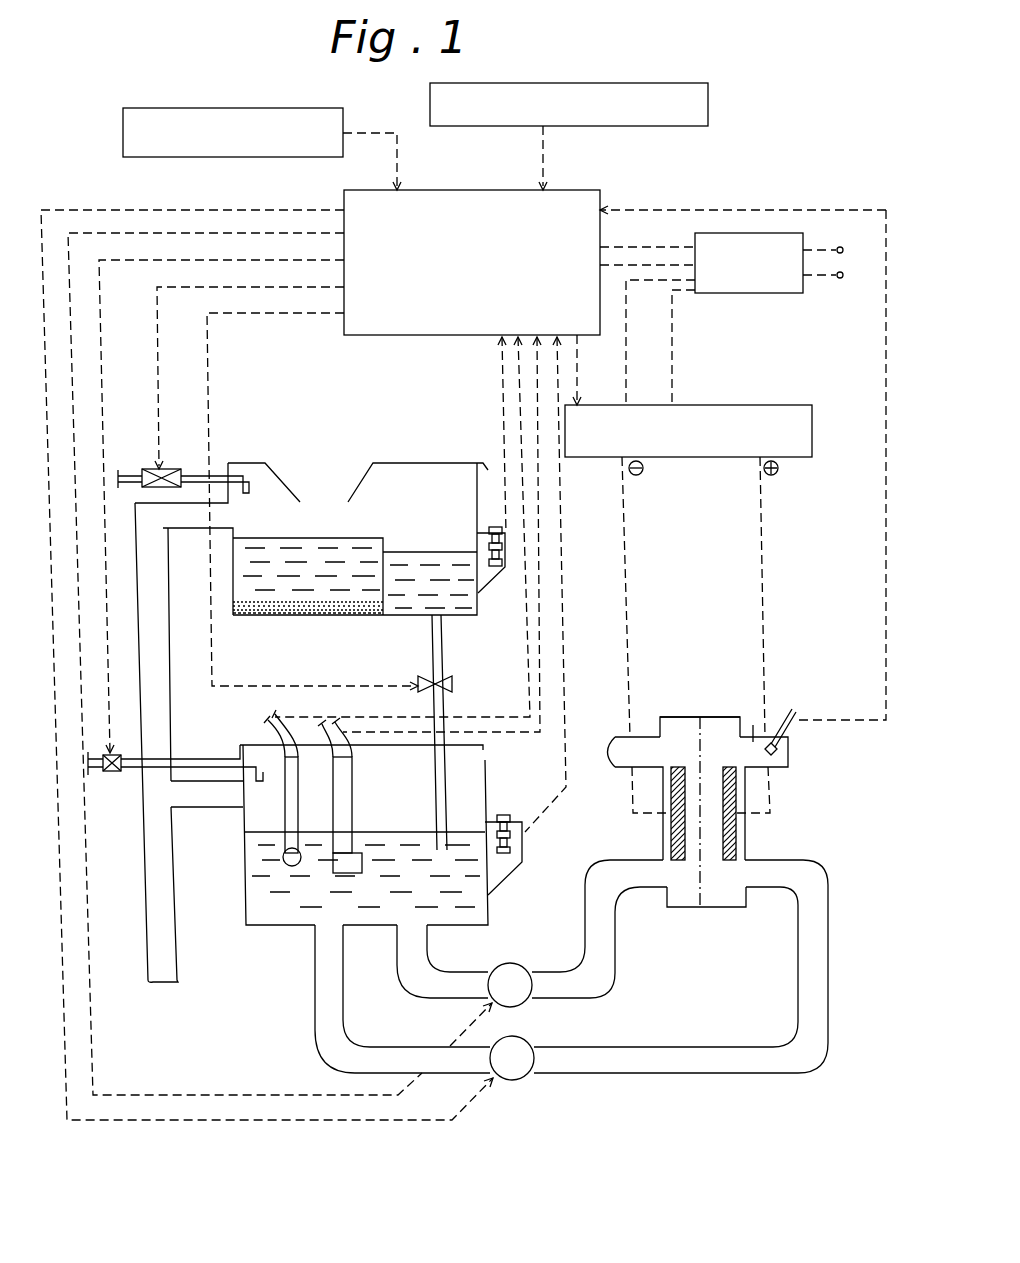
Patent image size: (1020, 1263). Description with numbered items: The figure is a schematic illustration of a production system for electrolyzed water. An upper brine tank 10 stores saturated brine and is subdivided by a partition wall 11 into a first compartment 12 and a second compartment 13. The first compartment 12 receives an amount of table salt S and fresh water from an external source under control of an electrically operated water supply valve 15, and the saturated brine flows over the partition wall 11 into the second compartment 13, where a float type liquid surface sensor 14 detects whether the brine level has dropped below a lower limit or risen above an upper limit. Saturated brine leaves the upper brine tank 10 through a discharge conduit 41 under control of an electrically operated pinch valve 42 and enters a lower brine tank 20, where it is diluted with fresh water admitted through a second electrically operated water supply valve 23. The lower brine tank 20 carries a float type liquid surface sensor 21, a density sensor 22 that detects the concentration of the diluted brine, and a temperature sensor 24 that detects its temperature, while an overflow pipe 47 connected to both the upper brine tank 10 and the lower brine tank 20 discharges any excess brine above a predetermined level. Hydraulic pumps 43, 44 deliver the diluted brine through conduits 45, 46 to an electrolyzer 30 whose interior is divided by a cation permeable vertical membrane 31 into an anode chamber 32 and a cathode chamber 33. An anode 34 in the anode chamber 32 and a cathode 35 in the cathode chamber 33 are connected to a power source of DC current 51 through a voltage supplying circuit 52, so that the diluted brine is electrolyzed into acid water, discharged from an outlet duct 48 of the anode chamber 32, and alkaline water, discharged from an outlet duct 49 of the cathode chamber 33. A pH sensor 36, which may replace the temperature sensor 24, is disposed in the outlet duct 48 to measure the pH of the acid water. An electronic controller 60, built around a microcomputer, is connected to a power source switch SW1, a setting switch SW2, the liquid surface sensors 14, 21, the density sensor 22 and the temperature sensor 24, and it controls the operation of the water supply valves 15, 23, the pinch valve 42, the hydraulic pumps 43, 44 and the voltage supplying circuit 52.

The power source switch SW1 is at (123, 132).
The setting switch SW2 is at (708, 108).
The electronic controller 60 is at (437, 337).
The power source of DC current 51 is at (778, 294).
The voltage supplying circuit 52 is at (767, 405).
The upper brine tank 10 is at (429, 453).
The partition wall 11 is at (383, 588).
The first compartment 12 is at (300, 592).
The second compartment 13 is at (418, 605).
The float type liquid surface sensor 14 is at (500, 570).
The water supply valve 15 is at (152, 468).
The table salt S is at (255, 613).
The overflow pipe 47 is at (157, 715).
The water supply valve 23 is at (112, 772).
The lower brine tank 20 is at (490, 774).
The float type liquid surface sensor 21 is at (508, 852).
The density sensor 22 is at (342, 785).
The temperature sensor 24 is at (286, 797).
The discharge conduit 41 is at (440, 655).
The pinch valve 42 is at (452, 690).
The hydraulic pump 43 is at (518, 1036).
The hydraulic pump 44 is at (514, 963).
The conduit 45 is at (800, 985).
The conduit 46 is at (605, 940).
The electrolyzer 30 is at (801, 751).
The cation permeable vertical membrane 31 is at (700, 802).
The anode chamber 32 is at (722, 718).
The cathode chamber 33 is at (680, 718).
The anode 34 is at (745, 842).
The cathode 35 is at (680, 842).
The pH sensor 36 is at (773, 755).
The outlet duct 48 is at (753, 725).
The outlet duct 49 is at (618, 745).